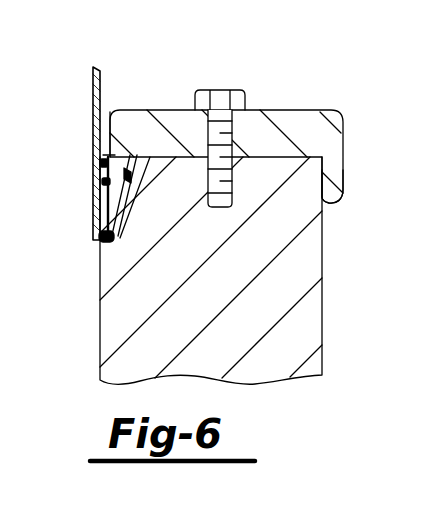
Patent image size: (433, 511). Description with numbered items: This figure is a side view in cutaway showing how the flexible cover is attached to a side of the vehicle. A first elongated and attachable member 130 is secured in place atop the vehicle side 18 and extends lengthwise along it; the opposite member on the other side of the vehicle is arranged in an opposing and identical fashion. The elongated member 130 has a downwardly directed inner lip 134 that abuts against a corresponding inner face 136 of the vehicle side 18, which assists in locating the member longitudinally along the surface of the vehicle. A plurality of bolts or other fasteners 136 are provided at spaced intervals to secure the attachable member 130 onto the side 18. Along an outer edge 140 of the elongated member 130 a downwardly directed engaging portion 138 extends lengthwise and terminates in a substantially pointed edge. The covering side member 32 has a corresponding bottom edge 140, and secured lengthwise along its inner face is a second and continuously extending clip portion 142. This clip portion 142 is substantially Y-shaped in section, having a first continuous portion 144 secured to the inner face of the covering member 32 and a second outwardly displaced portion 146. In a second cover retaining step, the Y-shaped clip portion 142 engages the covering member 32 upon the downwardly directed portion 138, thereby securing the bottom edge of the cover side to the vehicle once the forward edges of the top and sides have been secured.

The vehicle side 18 is at (100, 318).
The covering side member 32 is at (93, 87).
The first elongated and attachable member 130 is at (303, 120).
The inner lip 134 is at (344, 185).
The bolt or fastener 136 is at (229, 89).
The downwardly directed engaging portion 138 is at (96, 166).
The outer edge 140 is at (121, 120).
The second continuously extending clip portion 142 is at (100, 240).
The first continuous portion 144 is at (93, 177).
The second outwardly displaced portion 146 is at (128, 162).